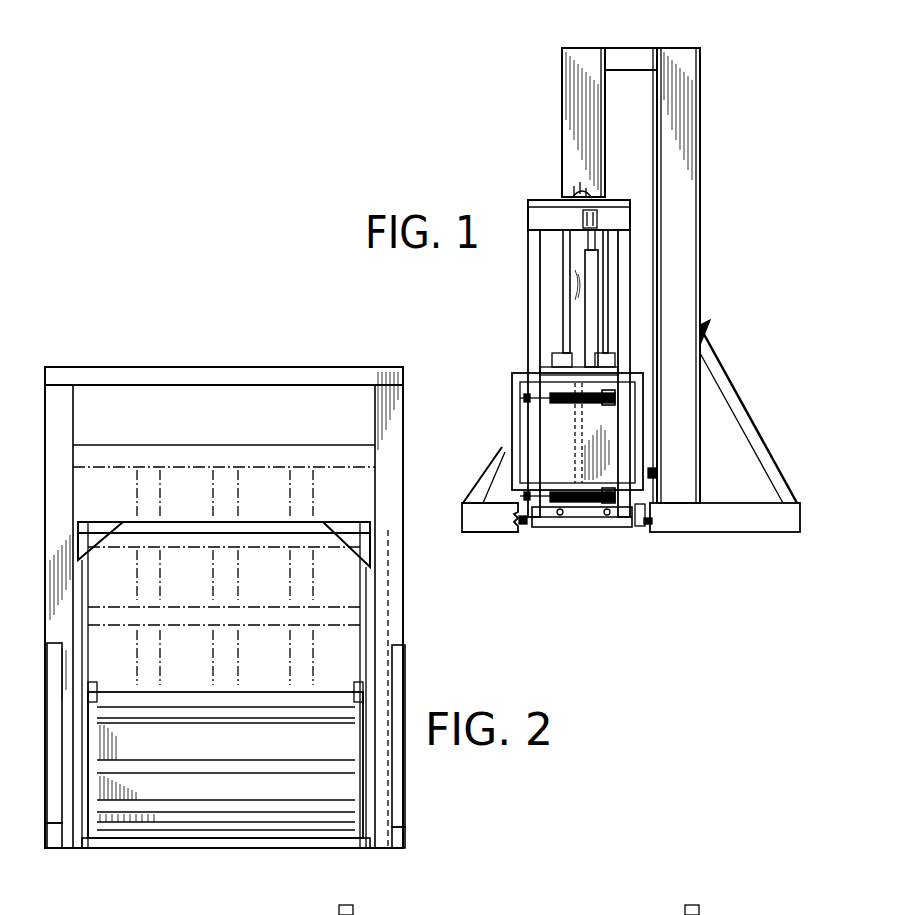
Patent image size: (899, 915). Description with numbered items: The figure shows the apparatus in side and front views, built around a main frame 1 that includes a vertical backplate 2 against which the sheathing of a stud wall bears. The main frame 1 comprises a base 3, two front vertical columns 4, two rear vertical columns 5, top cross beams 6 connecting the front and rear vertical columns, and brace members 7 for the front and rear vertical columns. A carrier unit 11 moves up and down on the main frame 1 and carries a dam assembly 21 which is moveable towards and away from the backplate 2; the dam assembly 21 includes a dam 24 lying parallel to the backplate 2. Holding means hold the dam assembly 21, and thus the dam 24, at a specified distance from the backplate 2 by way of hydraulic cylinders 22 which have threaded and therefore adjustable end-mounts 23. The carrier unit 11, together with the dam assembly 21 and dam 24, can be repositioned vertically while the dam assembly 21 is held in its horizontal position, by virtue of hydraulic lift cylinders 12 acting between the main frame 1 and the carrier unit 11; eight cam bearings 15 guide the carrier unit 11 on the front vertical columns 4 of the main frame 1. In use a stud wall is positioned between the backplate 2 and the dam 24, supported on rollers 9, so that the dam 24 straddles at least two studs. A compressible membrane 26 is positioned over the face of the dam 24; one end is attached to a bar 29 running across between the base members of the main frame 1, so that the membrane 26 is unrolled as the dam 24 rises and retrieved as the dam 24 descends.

In FIG. 1, the main frame 1 is at (709, 275).
In FIG. 2, the main frame 1 is at (402, 378).
In FIG. 1, the vertical backplate 2 is at (666, 196).
In FIG. 1, the base 3 is at (734, 532).
In FIG. 2, the base 3 is at (52, 850).
In FIG. 1, the front vertical columns 4 is at (590, 52).
In FIG. 1, the rear vertical columns 5 is at (700, 52).
In FIG. 1, the top cross beams 6 is at (618, 52).
In FIG. 2, the top cross beams 6 is at (112, 366).
In FIG. 1, the brace members 7 is at (472, 484).
In FIG. 2, the brace members 7 is at (48, 658).
In FIG. 1, the rollers 9 is at (658, 474).
In FIG. 1, the carrier unit 11 is at (520, 254).
In FIG. 2, the carrier unit 11 is at (190, 526).
In FIG. 1, the hydraulic lift cylinders 12 is at (566, 264).
In FIG. 2, the hydraulic lift cylinders 12 is at (388, 600).
In FIG. 1, the cam bearings 15 is at (584, 356).
In FIG. 1, the dam assembly 21 is at (512, 396).
In FIG. 2, the dam assembly 21 is at (256, 788).
In FIG. 1, the hydraulic cylinders 22 is at (564, 412).
In FIG. 1, the end-mounts 23 is at (526, 400).
In FIG. 1, the dam 24 is at (702, 336).
In FIG. 1, the compressible membrane 26 is at (642, 524).
In FIG. 1, the bar 29 is at (626, 540).